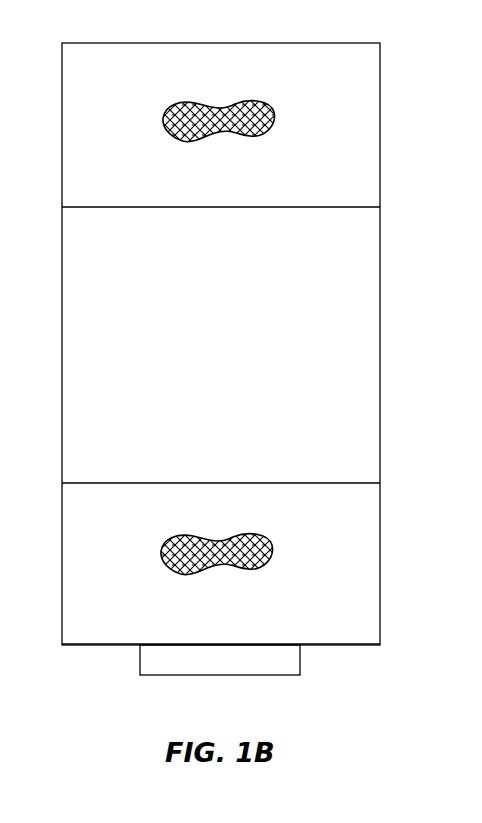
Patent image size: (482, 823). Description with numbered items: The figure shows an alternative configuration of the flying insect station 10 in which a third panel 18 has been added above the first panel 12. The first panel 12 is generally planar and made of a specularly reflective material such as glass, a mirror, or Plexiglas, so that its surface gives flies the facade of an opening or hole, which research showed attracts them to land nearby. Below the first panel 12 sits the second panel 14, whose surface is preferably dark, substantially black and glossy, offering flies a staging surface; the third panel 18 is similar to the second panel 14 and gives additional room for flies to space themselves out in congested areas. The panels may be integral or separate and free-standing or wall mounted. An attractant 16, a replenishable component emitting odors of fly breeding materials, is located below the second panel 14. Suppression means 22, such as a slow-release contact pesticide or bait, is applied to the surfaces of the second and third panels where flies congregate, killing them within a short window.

The flying insect station 10 is at (361, 34).
The first panel 12 is at (362, 297).
The second panel 14 is at (362, 539).
The attractant 16 is at (275, 670).
The third panel 18 is at (362, 118).
The suppression means 22 is at (186, 107).